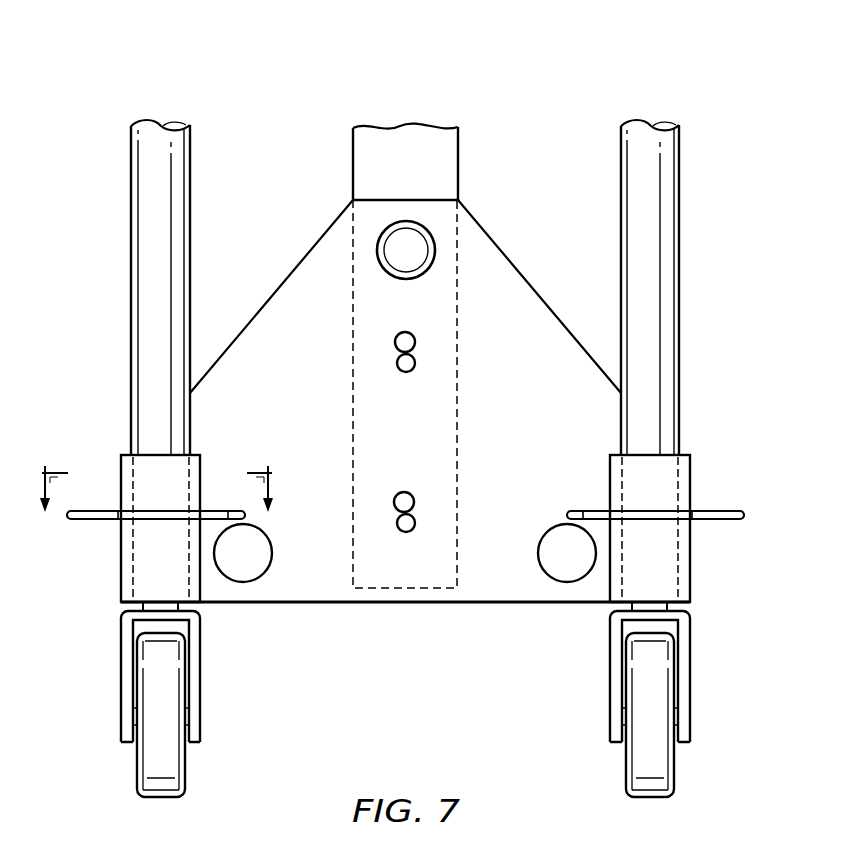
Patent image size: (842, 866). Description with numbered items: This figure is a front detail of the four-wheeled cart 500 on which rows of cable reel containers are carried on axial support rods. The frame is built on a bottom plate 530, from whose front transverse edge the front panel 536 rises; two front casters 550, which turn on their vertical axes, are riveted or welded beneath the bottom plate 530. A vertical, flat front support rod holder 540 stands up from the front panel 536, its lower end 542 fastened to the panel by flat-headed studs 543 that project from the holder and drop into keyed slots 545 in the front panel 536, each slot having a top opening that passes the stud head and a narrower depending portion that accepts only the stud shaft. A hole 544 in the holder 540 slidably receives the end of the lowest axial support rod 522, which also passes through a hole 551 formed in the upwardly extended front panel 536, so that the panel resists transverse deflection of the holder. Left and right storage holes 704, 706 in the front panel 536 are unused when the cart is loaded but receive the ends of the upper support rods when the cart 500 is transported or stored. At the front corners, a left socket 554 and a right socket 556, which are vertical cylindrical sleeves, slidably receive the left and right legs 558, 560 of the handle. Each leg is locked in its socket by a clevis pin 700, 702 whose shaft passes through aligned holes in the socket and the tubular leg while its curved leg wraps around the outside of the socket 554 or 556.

The cart 500 is at (358, 66).
The front support rod holder 540 is at (353, 158).
The hole 544 is at (413, 232).
The axial support rod 522 is at (397, 255).
The hole 551 is at (432, 268).
The front panel 536 is at (270, 300).
The keyed slot 545 is at (414, 338).
The flat-headed stud 543 is at (403, 373).
The lower end 542 is at (385, 590).
The right leg 560 is at (131, 250).
The left leg 558 is at (679, 250).
The right socket 556 is at (122, 577).
The left socket 554 is at (692, 565).
The clevis pin 702 is at (84, 520).
The clevis pin 700 is at (725, 510).
The right storage hole 706 is at (270, 562).
The left storage hole 704 is at (540, 562).
The bottom plate 530 is at (490, 604).
The front caster 550 is at (137, 767).